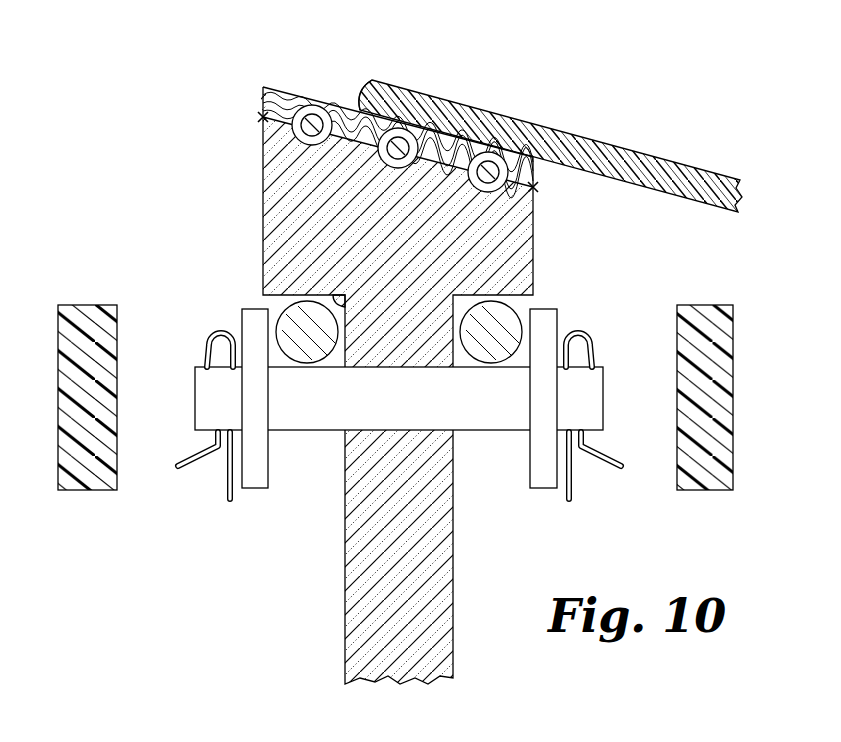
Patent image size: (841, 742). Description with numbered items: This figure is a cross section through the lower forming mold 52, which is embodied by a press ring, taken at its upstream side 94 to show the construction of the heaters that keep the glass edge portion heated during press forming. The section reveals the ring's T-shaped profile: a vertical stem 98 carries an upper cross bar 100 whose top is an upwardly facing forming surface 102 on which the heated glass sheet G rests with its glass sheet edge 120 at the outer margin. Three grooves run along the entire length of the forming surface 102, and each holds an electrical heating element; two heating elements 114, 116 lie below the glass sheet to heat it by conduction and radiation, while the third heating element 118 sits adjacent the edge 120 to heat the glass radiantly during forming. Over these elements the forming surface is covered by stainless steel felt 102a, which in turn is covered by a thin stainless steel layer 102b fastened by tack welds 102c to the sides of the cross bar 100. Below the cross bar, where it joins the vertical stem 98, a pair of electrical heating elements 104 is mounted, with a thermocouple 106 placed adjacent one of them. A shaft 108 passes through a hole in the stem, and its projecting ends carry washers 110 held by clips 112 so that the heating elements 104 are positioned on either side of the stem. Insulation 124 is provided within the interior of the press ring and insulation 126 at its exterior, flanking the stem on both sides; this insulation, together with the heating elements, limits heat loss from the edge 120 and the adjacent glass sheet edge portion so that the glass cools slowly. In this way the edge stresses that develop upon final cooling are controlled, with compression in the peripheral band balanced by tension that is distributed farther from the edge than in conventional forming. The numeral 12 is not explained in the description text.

The cotter pin eye 12 is at (208, 348).
The lower forming mold 52 is at (182, 108).
The upstream side 94 is at (351, 385).
The vertical stem 98 is at (455, 610).
The upper cross bar 100 is at (262, 195).
The upwardly facing forming surface 102 is at (264, 92).
The stainless steel felt 102a is at (487, 150).
The thin stainless steel layer 102b is at (388, 113).
The tack welds 102c is at (260, 118).
The electrical heating elements 104 is at (484, 320).
The thermocouple 106 is at (333, 296).
The shaft 108 is at (408, 405).
The washers 110 is at (246, 310).
The clips 112 is at (586, 345).
The electrical heating element 114 is at (540, 150).
The electrical heating element 116 is at (482, 152).
The electrical heating element 118 is at (318, 108).
The glass sheet edge 120 is at (352, 100).
The insulation 124 is at (700, 305).
The insulation 126 is at (85, 305).
The glass sheet G is at (643, 153).